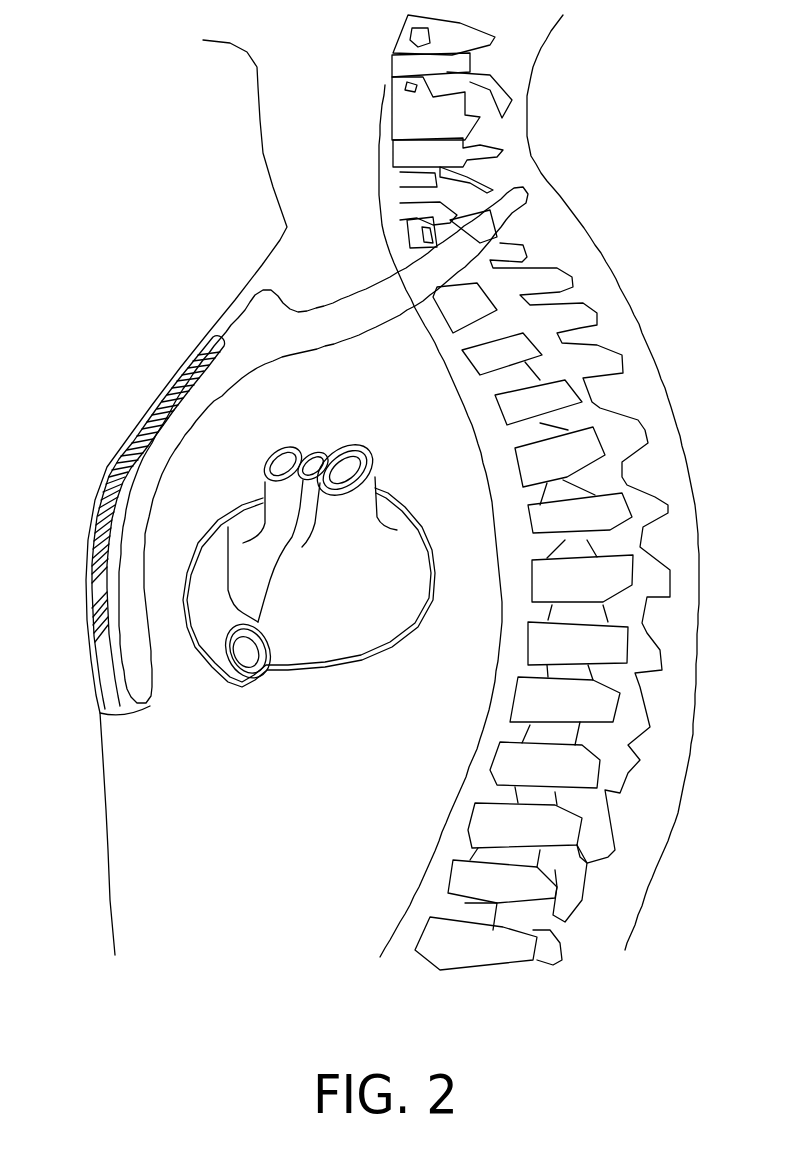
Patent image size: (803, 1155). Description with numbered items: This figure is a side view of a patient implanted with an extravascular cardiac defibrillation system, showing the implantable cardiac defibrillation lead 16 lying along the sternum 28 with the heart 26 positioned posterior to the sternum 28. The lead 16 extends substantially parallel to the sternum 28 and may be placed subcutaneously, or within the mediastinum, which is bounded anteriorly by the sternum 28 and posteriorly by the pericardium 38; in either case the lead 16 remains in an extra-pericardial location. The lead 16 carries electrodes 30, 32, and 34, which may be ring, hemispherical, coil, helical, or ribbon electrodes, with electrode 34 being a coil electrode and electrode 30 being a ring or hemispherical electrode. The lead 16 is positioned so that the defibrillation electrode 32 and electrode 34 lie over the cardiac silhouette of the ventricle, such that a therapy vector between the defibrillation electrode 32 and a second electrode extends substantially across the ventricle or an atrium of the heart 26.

The implantable cardiac defibrillation lead 16 is at (105, 652).
The heart 26 is at (387, 603).
The sternum 28 is at (236, 323).
The electrode 30 is at (98, 622).
The defibrillation electrode 32 is at (100, 490).
The electrode 34 is at (163, 372).
The pericardium 38 is at (356, 663).